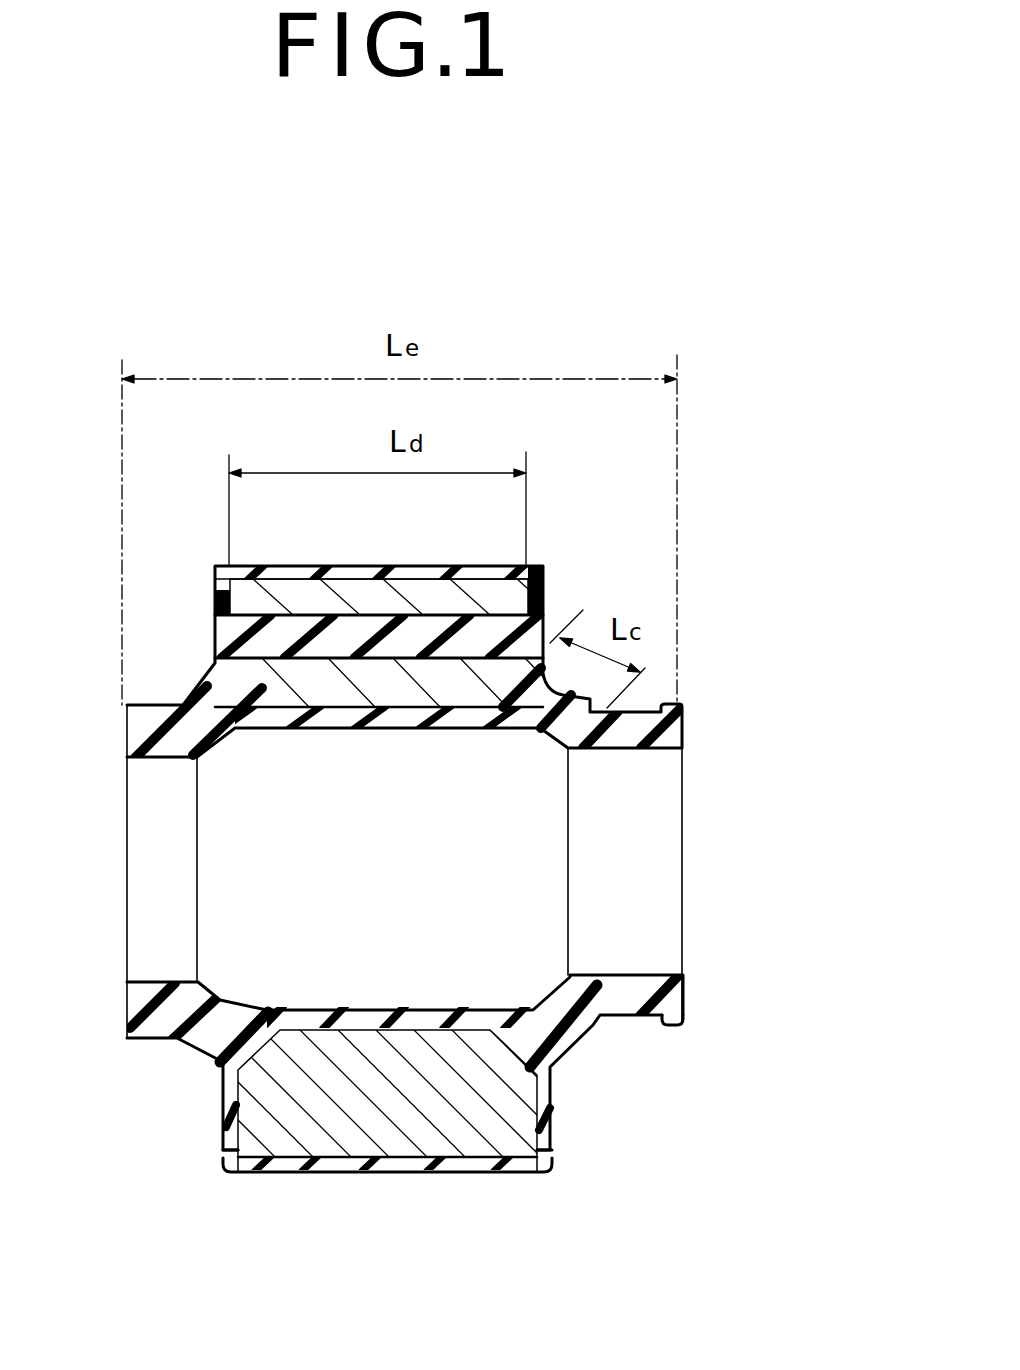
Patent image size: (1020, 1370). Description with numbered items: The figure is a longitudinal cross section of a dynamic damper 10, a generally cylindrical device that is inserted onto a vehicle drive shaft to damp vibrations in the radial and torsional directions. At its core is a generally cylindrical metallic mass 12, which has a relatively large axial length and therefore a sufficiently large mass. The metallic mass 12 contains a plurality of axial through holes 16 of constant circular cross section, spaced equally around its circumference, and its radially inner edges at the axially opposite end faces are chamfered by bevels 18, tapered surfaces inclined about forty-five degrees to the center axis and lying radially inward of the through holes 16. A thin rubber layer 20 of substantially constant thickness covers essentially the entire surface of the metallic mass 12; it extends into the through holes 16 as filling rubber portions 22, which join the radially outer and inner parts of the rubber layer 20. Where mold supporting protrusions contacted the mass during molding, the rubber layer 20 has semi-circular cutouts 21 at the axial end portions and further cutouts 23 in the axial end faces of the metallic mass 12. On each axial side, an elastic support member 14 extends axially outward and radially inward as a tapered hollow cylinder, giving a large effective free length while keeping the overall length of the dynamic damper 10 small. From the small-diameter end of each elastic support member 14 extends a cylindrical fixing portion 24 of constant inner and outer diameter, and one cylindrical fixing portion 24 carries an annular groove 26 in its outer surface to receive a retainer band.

The dynamic damper 10 is at (716, 508).
The metallic mass 12 is at (307, 1132).
The elastic support member 14 is at (177, 1040).
The through hole 16 is at (222, 628).
The bevel 18 is at (247, 691).
The rubber layer 20 is at (305, 575).
The cutout 21 is at (248, 1176).
The filling rubber portion 22 is at (428, 640).
The cutout 23 is at (228, 1157).
The cylindrical fixing portion 24 is at (163, 717).
The annular groove 26 is at (664, 1030).